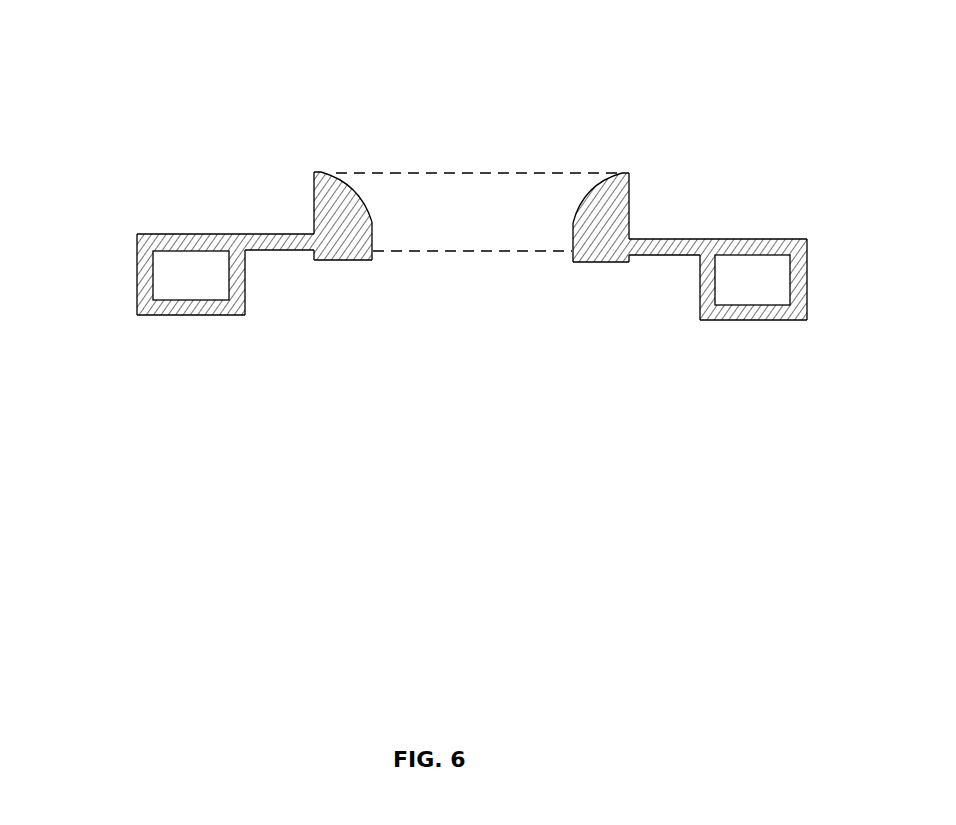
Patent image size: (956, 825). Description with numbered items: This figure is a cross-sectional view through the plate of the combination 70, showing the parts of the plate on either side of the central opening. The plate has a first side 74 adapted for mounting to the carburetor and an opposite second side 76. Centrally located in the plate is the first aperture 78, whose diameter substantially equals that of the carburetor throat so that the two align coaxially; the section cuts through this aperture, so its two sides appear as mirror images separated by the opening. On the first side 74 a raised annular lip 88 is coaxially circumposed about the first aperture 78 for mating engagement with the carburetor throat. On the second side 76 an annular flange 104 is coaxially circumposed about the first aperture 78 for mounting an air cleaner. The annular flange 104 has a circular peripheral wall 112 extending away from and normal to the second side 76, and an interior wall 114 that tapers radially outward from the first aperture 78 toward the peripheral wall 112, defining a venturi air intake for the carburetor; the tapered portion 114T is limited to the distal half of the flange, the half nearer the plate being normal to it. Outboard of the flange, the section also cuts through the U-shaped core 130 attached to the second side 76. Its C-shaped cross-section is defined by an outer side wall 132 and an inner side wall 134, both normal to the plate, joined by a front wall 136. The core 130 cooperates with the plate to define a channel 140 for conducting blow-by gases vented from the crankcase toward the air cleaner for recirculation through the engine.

The combination 70 is at (175, 67).
The first side 74 is at (192, 234).
The second side 76 is at (283, 250).
The first aperture 78 is at (516, 192).
The raised annular lip 88 is at (338, 260).
The annular flange 104 is at (335, 182).
The peripheral wall 112 is at (314, 208).
The interior wall 114 is at (373, 224).
The tapered portion 114T is at (337, 172).
The U-shaped core 130 is at (102, 262).
The outer side wall 132 is at (137, 245).
The inner side wall 134 is at (245, 283).
The front wall 136 is at (220, 315).
The channel 140 is at (188, 277).